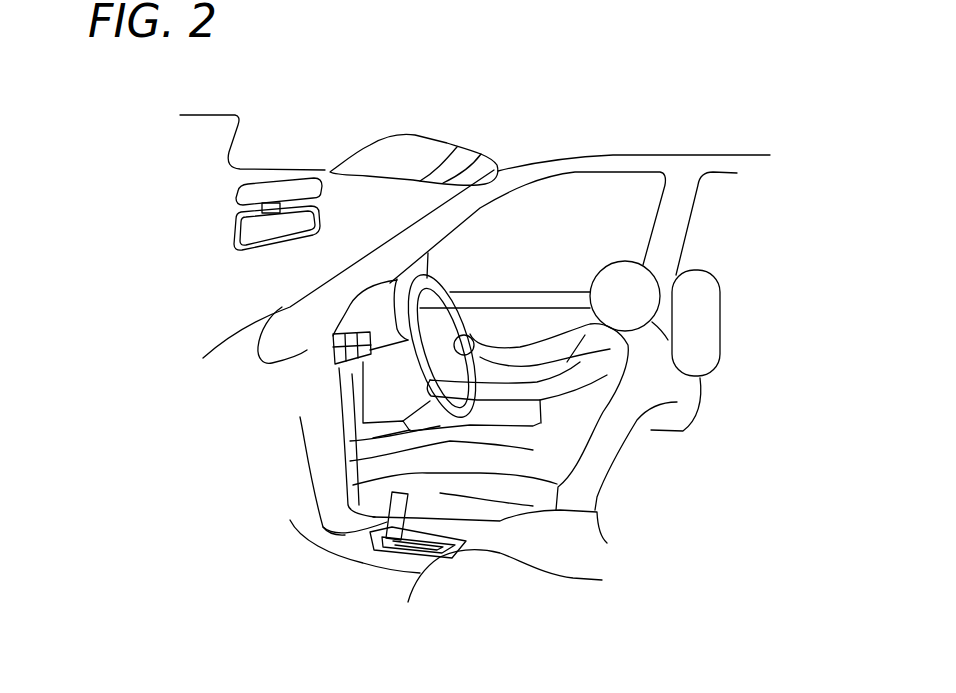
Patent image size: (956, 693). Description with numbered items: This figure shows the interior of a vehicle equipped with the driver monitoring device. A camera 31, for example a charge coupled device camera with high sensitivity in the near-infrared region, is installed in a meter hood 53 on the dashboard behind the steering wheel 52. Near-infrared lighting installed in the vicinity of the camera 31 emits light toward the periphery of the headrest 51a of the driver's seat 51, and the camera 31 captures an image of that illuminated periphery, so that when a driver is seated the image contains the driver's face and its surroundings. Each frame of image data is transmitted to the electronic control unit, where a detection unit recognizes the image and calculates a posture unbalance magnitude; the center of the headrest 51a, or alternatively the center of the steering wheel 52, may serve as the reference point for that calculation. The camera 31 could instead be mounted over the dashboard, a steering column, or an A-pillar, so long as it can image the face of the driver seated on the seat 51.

The camera 31 is at (334, 354).
The driver's seat 51 is at (566, 368).
The headrest 51a is at (707, 358).
The steering wheel 52 is at (435, 279).
The meter hood 53 is at (308, 318).